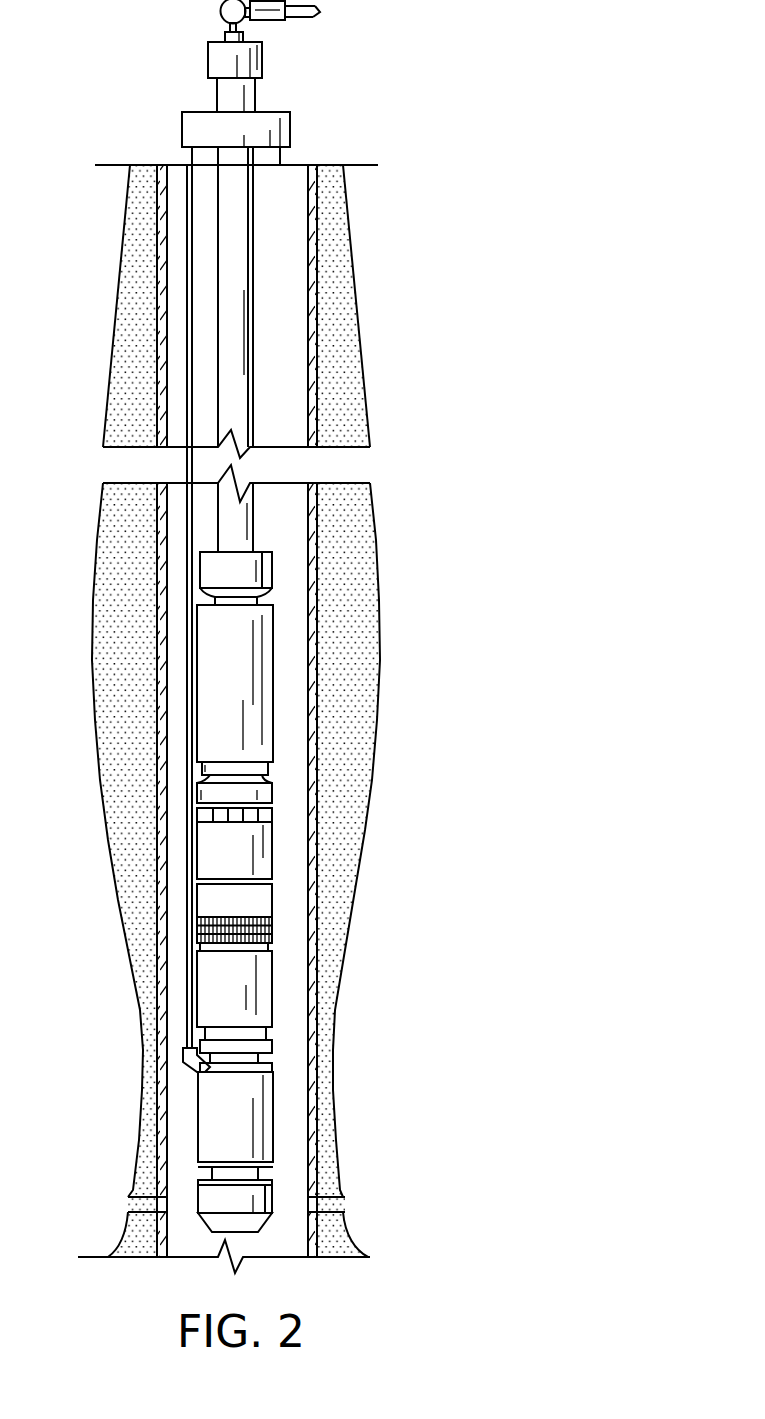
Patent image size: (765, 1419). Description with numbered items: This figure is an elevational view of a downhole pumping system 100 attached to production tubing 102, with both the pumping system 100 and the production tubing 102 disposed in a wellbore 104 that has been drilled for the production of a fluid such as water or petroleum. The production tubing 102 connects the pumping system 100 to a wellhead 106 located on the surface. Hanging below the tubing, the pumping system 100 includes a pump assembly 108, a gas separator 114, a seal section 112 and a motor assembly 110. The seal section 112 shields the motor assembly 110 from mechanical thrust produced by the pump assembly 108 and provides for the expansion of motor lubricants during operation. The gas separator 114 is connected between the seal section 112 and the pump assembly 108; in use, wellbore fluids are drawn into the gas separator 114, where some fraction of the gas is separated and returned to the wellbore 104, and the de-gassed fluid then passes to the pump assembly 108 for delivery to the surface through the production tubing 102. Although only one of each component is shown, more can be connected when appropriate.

The pumping system 100 is at (340, 897).
The production tubing 102 is at (247, 210).
The wellbore 104 is at (312, 278).
The wellhead 106 is at (223, 57).
The pump assembly 108 is at (268, 728).
The gas separator 114 is at (275, 865).
The seal section 112 is at (273, 965).
The motor assembly 110 is at (267, 1127).